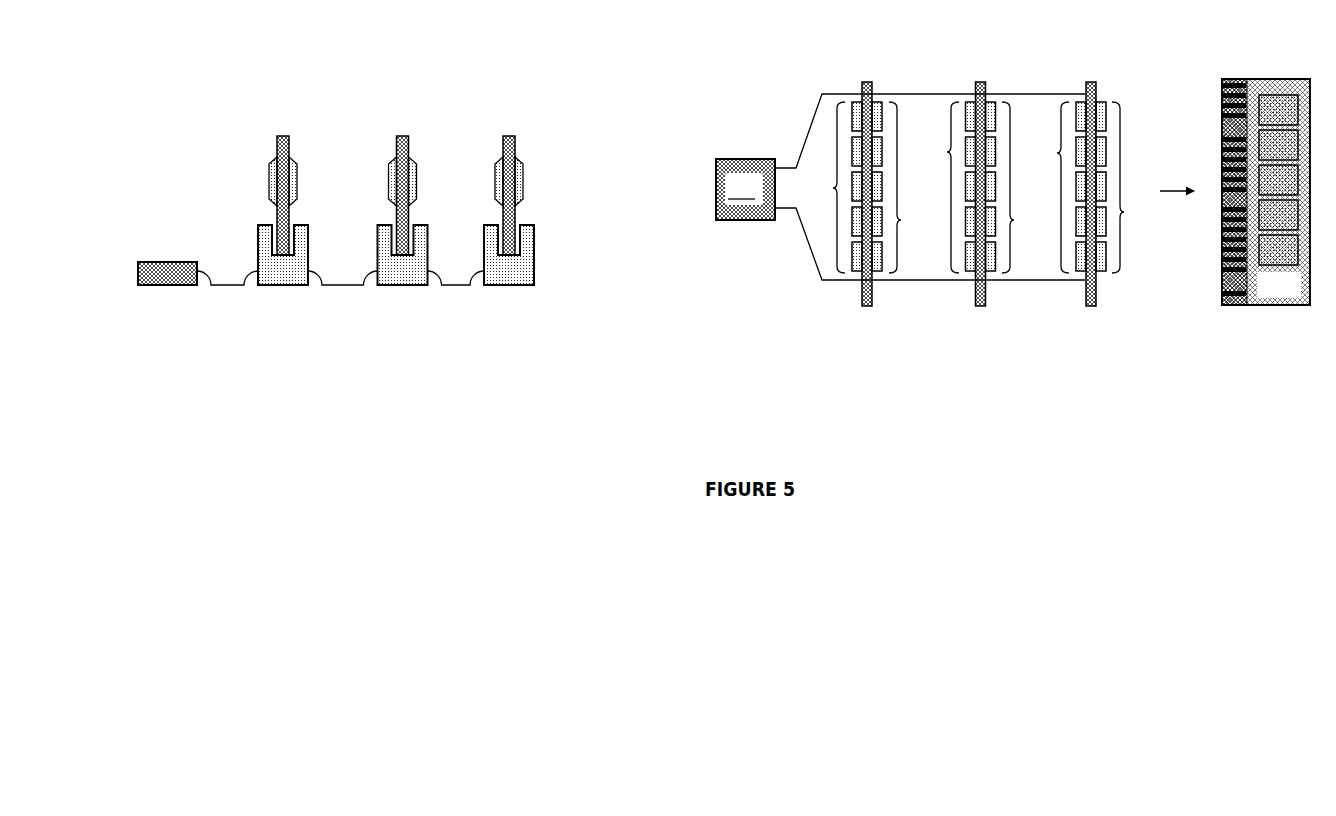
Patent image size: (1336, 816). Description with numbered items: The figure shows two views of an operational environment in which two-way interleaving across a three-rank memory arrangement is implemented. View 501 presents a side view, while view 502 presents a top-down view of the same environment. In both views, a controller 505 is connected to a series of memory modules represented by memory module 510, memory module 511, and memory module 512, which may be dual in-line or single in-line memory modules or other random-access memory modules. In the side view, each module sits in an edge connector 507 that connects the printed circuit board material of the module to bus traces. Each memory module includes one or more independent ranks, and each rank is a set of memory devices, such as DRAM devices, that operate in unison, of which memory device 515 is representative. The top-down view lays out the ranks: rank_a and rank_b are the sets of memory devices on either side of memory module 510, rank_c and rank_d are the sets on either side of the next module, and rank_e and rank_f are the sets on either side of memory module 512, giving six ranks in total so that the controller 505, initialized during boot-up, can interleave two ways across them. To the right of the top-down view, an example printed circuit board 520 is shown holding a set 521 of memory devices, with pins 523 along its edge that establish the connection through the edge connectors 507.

The view 501 is at (144, 122).
The view 502 is at (722, 60).
The controller 505 is at (165, 257).
The edge connectors 507 is at (309, 269).
The memory module 510 is at (284, 130).
The memory module 511 is at (403, 131).
The memory module 512 is at (509, 131).
The memory device 515 is at (530, 187).
The printed circuit board 520 is at (1291, 294).
The set of memory devices 521 is at (1291, 121).
The pins 523 is at (1222, 95).